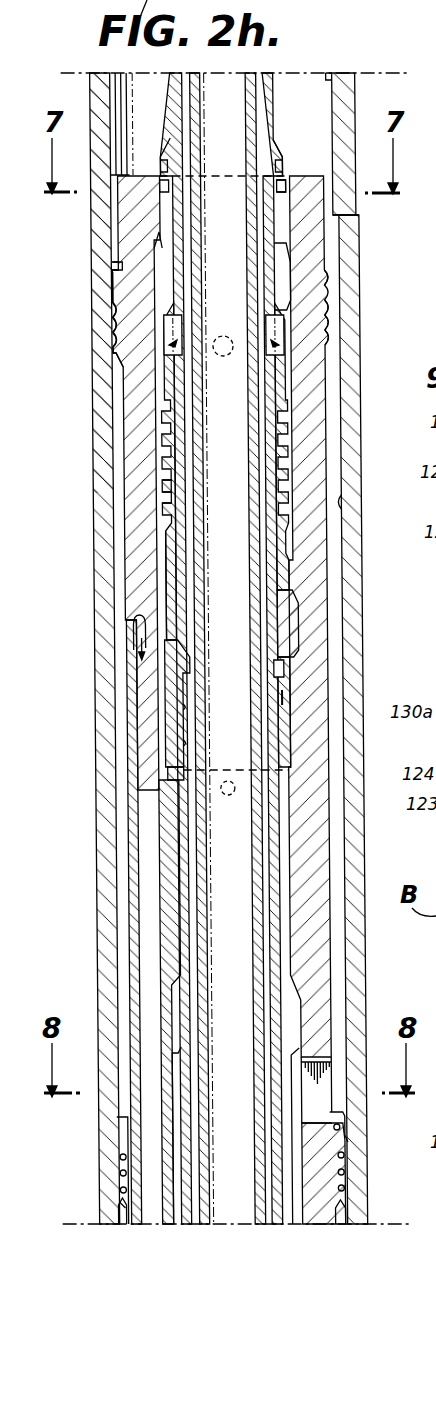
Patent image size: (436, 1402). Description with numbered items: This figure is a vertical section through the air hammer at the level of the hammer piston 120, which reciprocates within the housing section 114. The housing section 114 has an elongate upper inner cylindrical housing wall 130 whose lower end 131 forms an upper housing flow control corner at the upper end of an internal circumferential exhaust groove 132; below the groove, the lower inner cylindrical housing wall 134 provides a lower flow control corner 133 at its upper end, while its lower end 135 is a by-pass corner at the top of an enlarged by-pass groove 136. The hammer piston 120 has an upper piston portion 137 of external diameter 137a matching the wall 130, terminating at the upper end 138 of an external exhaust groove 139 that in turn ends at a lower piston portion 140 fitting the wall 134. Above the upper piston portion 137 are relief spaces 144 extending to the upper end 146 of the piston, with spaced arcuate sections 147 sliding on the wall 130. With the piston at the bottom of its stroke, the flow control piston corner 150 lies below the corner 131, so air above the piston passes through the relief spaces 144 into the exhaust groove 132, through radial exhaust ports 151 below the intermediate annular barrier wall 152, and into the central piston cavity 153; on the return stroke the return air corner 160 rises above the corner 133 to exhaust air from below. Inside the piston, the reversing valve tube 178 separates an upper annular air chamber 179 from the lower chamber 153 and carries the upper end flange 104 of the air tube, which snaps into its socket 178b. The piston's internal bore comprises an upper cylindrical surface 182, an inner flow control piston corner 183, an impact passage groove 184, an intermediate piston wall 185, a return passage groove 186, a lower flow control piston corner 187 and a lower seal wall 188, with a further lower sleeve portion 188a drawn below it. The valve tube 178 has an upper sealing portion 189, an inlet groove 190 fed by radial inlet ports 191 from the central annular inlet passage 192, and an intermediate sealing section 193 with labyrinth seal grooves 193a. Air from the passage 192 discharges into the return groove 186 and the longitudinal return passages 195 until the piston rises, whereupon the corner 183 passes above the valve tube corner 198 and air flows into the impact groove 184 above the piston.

The upper end flange 104 is at (270, 661).
The housing section 114 is at (91, 958).
The hammer piston 120 is at (306, 866).
The upper inner cylindrical housing wall 130 is at (325, 78).
The upper housing flow control corner 131 is at (331, 288).
The internal circumferential exhaust groove 132 is at (336, 513).
The lower flow control corner 133 is at (108, 1118).
The lower inner cylindrical housing wall 134 is at (330, 1131).
The lower end of lower wall 135 is at (334, 1222).
The by-pass groove 136 is at (106, 1213).
The upper piston portion 137 is at (116, 331).
The external diameter 137a is at (331, 343).
The upper end of exhaust groove 138 is at (331, 373).
The external exhaust groove 139 is at (331, 428).
The lower piston portion 140 is at (308, 1171).
The relief spaces 144 is at (330, 215).
The upper end of piston 146 is at (285, 176).
The arcuate sections 147 is at (110, 205).
The flow control piston corner 150 is at (116, 288).
The radial exhaust ports 151 is at (311, 1080).
The intermediate annular barrier wall 152 is at (285, 998).
The central piston cavity 153 is at (165, 1081).
The return air corner 160 is at (110, 1206).
The reversing valve tube 178 is at (280, 573).
The socket 178b is at (176, 705).
The upper annular air chamber 179 is at (113, 315).
The upper cylindrical piston surface 182 is at (160, 227).
The inner flow control piston corner 183 is at (112, 254).
The internal circumferential impact passage groove 184 is at (158, 382).
The intermediate inner cylindrical piston wall 185 is at (159, 581).
The internal circumferential return passage groove 186 is at (151, 638).
The lower flow control piston corner 187 is at (160, 673).
The lower internal piston seal wall portion 188 is at (166, 743).
The lower sleeve 188a is at (168, 776).
The upper external cylindrical sealing portion 189 is at (283, 178).
The external circumferential inlet groove 190 is at (292, 270).
The radial inlet ports 191 is at (331, 313).
The central annular inlet passage 192 is at (183, 308).
The intermediate cylindrical sealing section 193 is at (159, 463).
The labyrinth seal grooves 193a is at (159, 510).
The longitudinal return passages 195 is at (139, 863).
The upper flow control valve tube corner 198 is at (158, 160).